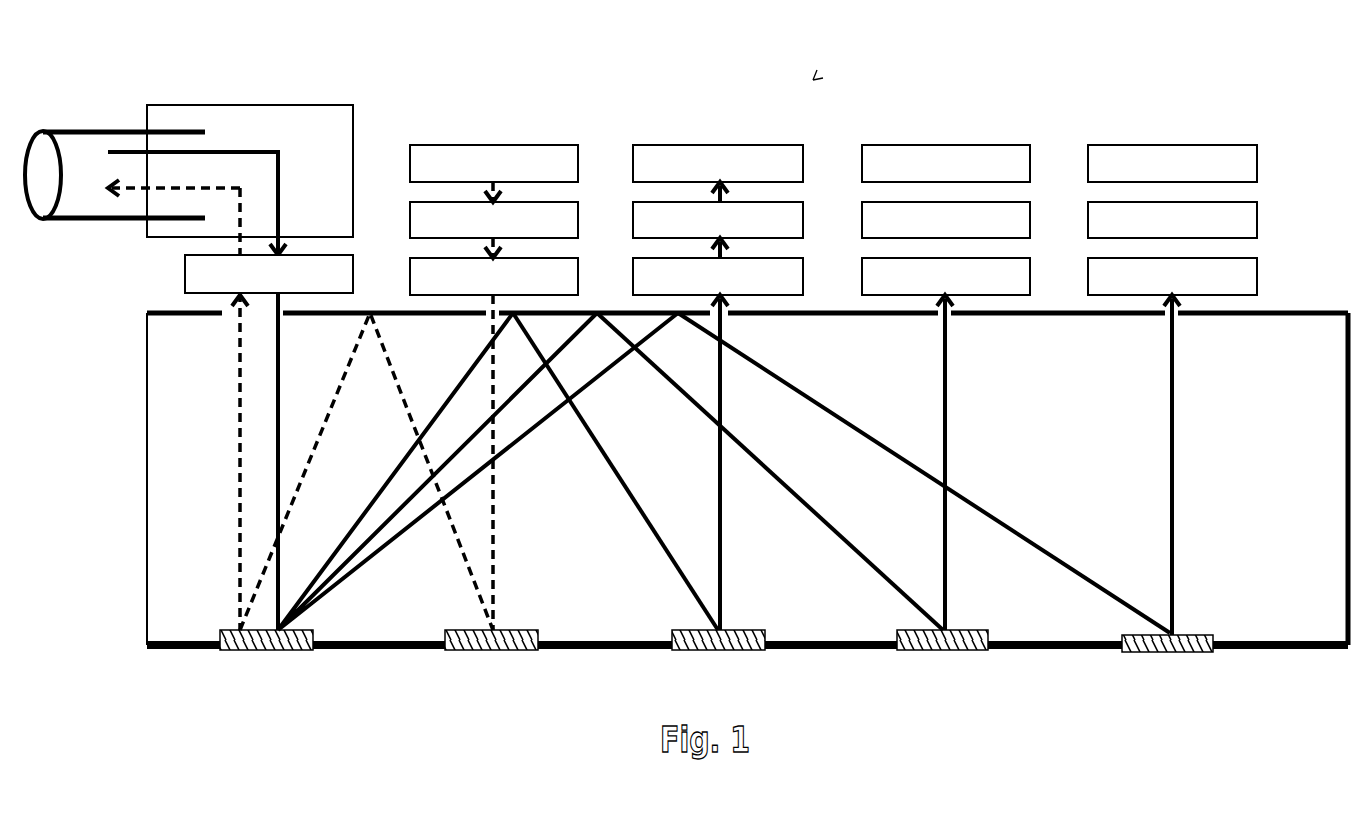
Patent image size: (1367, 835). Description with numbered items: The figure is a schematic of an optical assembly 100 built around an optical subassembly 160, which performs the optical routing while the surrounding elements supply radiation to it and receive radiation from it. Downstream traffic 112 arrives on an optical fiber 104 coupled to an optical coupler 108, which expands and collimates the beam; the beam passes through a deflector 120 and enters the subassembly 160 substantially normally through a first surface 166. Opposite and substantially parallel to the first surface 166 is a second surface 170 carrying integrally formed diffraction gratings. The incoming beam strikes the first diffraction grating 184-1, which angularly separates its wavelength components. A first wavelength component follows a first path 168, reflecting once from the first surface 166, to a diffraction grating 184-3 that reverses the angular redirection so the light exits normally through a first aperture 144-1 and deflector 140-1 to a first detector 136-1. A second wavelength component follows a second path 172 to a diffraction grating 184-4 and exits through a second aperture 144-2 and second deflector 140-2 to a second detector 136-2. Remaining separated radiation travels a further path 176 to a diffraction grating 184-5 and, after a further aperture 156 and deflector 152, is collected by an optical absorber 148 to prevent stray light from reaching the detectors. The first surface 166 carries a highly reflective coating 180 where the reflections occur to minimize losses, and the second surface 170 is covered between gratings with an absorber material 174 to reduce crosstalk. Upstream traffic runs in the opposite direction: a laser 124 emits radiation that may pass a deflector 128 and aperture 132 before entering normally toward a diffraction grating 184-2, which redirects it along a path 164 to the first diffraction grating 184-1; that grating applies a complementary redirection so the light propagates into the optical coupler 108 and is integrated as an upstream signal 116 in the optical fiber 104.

The optical assembly 100 is at (818, 75).
The optical fiber 104 is at (90, 130).
The optical coupler 108 is at (215, 105).
The downstream traffic 112 is at (280, 200).
The upstream signal 116 is at (160, 188).
The deflector 120 is at (185, 282).
The laser 124 is at (410, 162).
The deflector 128 is at (410, 218).
The aperture 132 is at (410, 275).
The first detector 136-1 is at (633, 162).
The deflector 140-1 is at (633, 218).
The first aperture 144-1 is at (633, 275).
The second detector 136-2 is at (862, 162).
The second deflector 140-2 is at (862, 218).
The second aperture 144-2 is at (862, 275).
The optical absorber 148 is at (1088, 162).
The deflector 152 is at (1088, 218).
The further aperture 156 is at (1088, 275).
The optical subassembly 160 is at (146, 461).
The path 164 is at (346, 376).
The first surface 166 is at (350, 649).
The first path 168 is at (628, 500).
The second surface 170 is at (147, 310).
The second path 172 is at (826, 530).
The absorber material 174 is at (1073, 641).
The further path 176 is at (1022, 535).
The highly reflective coating 180 is at (1020, 318).
The first diffraction grating 184-1 is at (295, 650).
The diffraction grating 184-2 is at (521, 650).
The diffraction grating 184-3 is at (745, 650).
The diffraction grating 184-4 is at (971, 650).
The diffraction grating 184-5 is at (1196, 652).